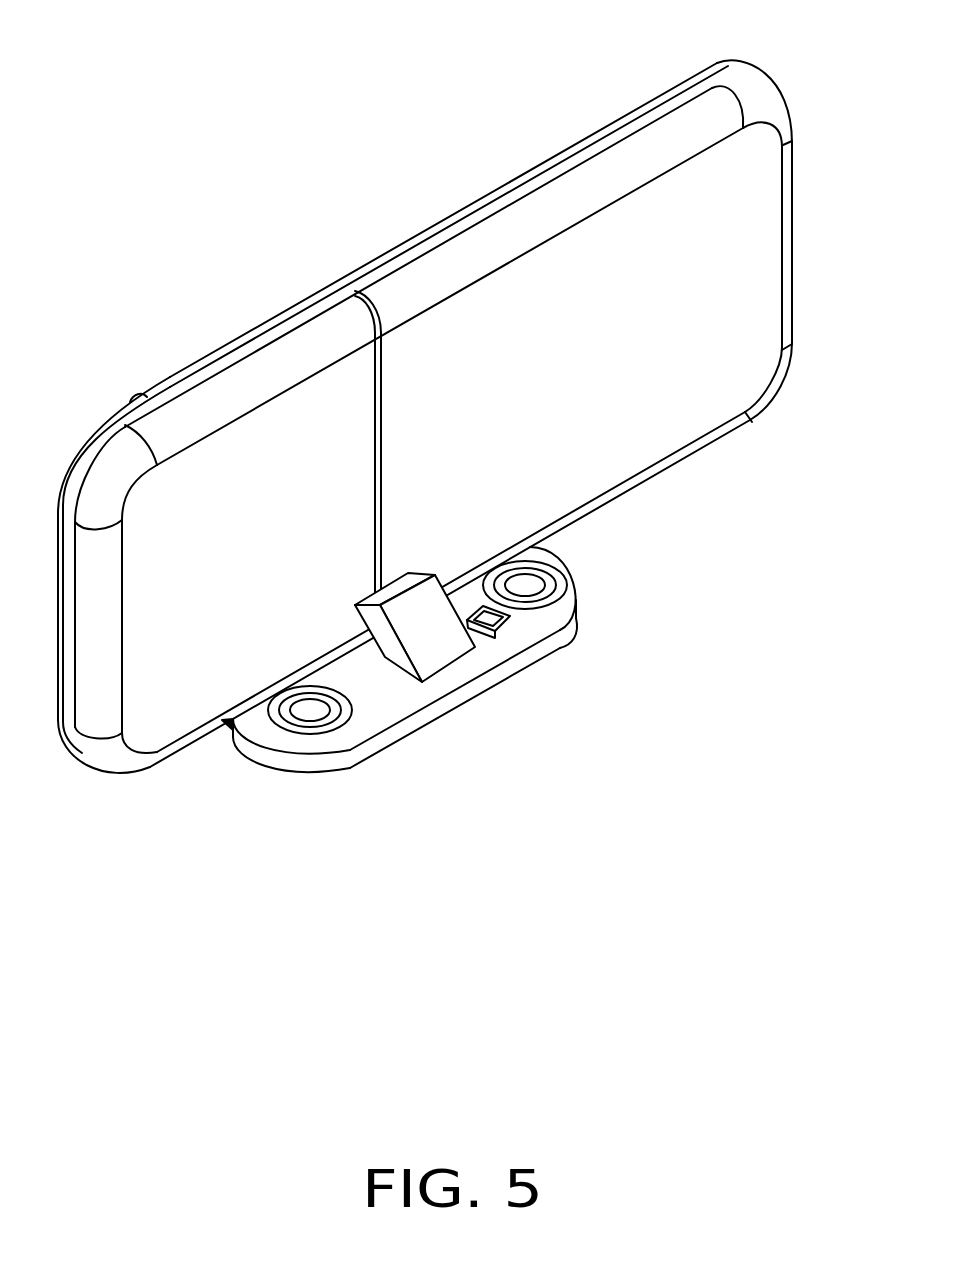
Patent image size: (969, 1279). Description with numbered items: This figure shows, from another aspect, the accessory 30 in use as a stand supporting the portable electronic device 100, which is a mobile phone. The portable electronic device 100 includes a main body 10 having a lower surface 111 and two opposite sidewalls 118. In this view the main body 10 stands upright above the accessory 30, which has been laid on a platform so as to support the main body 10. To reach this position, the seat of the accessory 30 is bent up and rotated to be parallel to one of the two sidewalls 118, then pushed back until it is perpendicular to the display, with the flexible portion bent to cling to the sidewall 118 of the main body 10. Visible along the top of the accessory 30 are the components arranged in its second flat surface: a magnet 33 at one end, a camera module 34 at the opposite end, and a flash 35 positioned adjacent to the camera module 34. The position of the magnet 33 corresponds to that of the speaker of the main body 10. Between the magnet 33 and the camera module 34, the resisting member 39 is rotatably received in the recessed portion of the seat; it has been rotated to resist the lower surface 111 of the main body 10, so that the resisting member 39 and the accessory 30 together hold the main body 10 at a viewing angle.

The portable electronic device 100 is at (326, 194).
The main body 10 is at (467, 397).
The lower surface 111 is at (750, 277).
The sidewall 118 is at (657, 473).
The accessory 30 is at (337, 752).
The magnet 33 is at (300, 707).
The camera module 34 is at (530, 583).
The flash 35 is at (500, 623).
The resisting member 39 is at (436, 647).